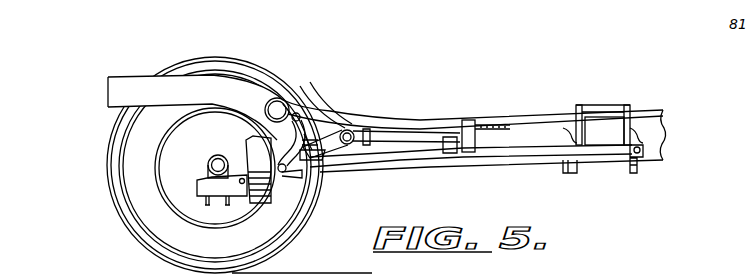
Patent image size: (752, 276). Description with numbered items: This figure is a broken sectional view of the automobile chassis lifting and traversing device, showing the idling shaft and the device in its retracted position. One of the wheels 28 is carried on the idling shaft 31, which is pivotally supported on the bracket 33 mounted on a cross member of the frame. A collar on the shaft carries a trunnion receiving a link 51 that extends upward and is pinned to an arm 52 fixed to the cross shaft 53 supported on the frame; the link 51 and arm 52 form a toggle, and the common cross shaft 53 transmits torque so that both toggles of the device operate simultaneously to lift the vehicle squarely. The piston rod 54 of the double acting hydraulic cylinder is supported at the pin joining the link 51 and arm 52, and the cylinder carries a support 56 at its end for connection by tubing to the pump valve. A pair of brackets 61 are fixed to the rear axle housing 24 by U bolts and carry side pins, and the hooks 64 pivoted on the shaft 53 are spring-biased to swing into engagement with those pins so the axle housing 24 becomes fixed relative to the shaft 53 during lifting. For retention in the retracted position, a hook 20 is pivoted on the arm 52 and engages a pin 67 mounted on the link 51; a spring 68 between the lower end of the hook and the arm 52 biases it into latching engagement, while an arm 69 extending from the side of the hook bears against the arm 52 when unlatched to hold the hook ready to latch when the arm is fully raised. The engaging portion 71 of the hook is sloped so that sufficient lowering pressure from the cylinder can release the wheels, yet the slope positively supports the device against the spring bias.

The hook 20 is at (291, 224).
The rear axle housing 24 is at (207, 161).
The wheels 28 is at (257, 143).
The idling shaft 31 is at (433, 164).
The bracket 33 is at (645, 149).
The link 51 is at (327, 158).
The arm 52 is at (313, 120).
The shaft 53 is at (276, 98).
The piston rod 54 is at (417, 140).
The support 56 is at (460, 142).
The brackets 61 is at (239, 188).
The hooks 64 is at (260, 147).
The pin 67 is at (302, 166).
The spring 68 is at (318, 133).
The arm 69 is at (300, 128).
The engaging portion 71 is at (310, 200).